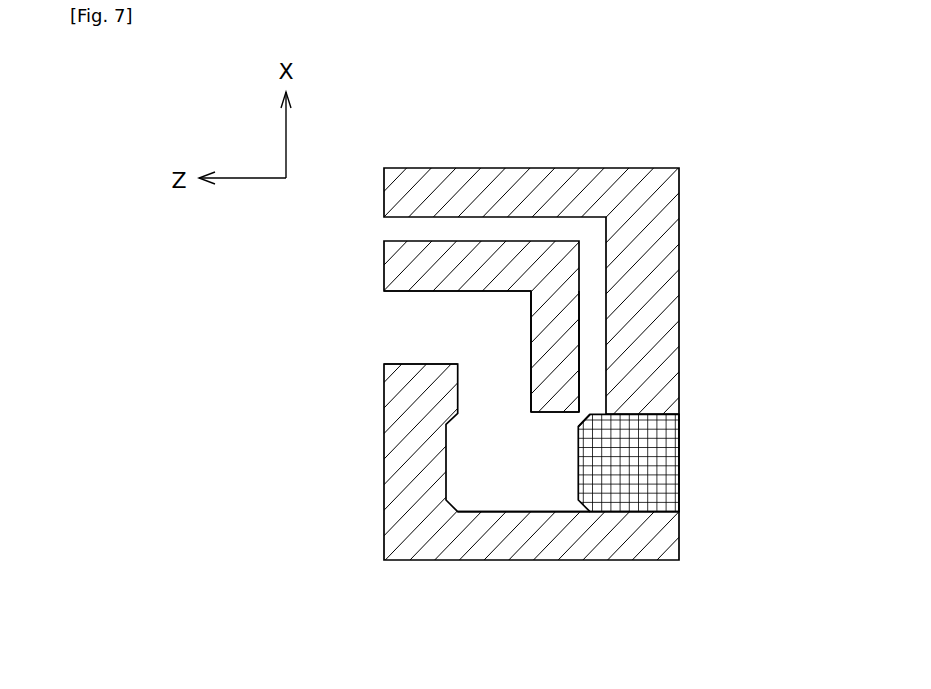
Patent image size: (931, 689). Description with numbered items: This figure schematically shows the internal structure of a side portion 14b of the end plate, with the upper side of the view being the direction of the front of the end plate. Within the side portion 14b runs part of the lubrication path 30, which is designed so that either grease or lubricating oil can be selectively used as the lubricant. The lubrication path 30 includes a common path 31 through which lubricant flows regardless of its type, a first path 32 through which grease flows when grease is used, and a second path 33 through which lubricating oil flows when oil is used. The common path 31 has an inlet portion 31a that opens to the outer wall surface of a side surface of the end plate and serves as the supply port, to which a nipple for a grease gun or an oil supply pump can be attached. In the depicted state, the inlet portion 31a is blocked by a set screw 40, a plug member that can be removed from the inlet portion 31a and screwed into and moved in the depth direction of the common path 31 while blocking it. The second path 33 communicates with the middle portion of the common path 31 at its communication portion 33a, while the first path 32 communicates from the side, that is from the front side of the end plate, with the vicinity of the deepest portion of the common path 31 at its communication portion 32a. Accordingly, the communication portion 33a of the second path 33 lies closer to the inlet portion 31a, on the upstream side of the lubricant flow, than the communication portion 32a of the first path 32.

The side portion 14b is at (663, 218).
The lubrication path 30 is at (250, 265).
The common path 31 is at (476, 464).
The first path 32 is at (398, 328).
The second path 33 is at (397, 229).
The inlet portion 31a is at (682, 470).
The communication portion 32a is at (495, 413).
The communication portion 33a is at (581, 421).
The set screw 40 is at (632, 483).